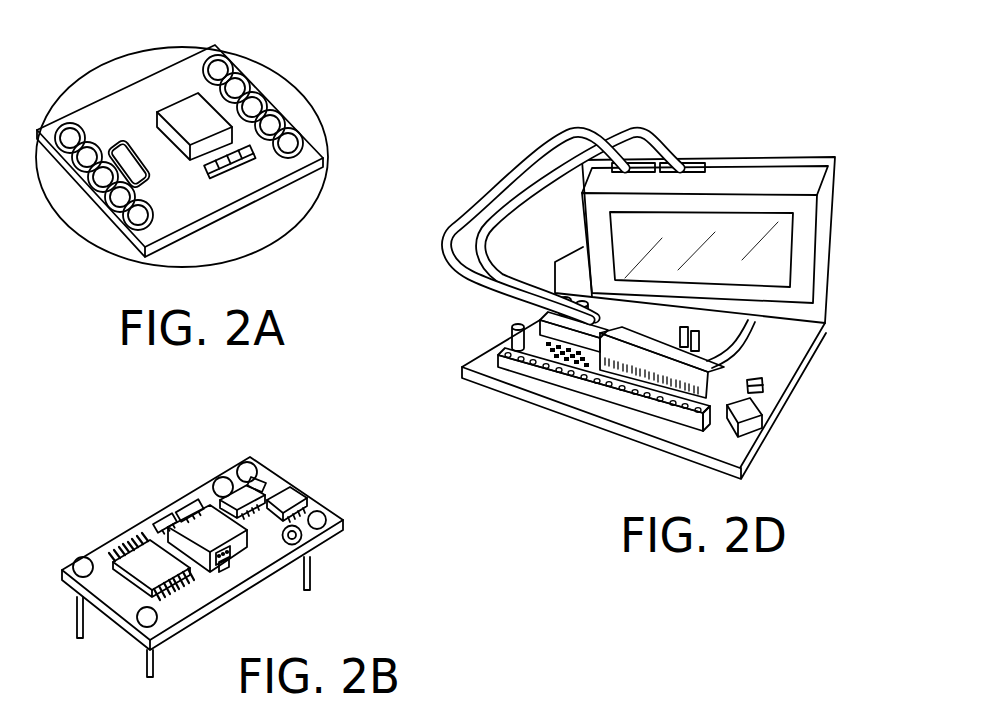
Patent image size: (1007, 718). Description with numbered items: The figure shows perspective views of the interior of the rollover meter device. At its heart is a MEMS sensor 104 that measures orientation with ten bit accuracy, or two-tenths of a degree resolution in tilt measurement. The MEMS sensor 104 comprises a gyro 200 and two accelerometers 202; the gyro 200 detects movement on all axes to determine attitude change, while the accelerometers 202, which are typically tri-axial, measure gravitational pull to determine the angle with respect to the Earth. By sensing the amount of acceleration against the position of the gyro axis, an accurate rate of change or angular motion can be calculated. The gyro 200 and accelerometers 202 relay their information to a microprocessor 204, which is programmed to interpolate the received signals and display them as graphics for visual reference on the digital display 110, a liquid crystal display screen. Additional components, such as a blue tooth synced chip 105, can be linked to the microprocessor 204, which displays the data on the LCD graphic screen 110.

In FIG. 2A, the MEMS sensor 104 is at (239, 145).
In FIG. 2B, the MEMS sensor 104 is at (256, 544).
In FIG. 2A, the gyro 200 is at (238, 86).
In FIG. 2B, the accelerometers 202 is at (260, 476).
In FIG. 2D, the digital display 110 is at (757, 160).
In FIG. 2D, the microprocessor 204 is at (657, 365).
In FIG. 2D, the blue tooth synced chip 105 is at (747, 386).